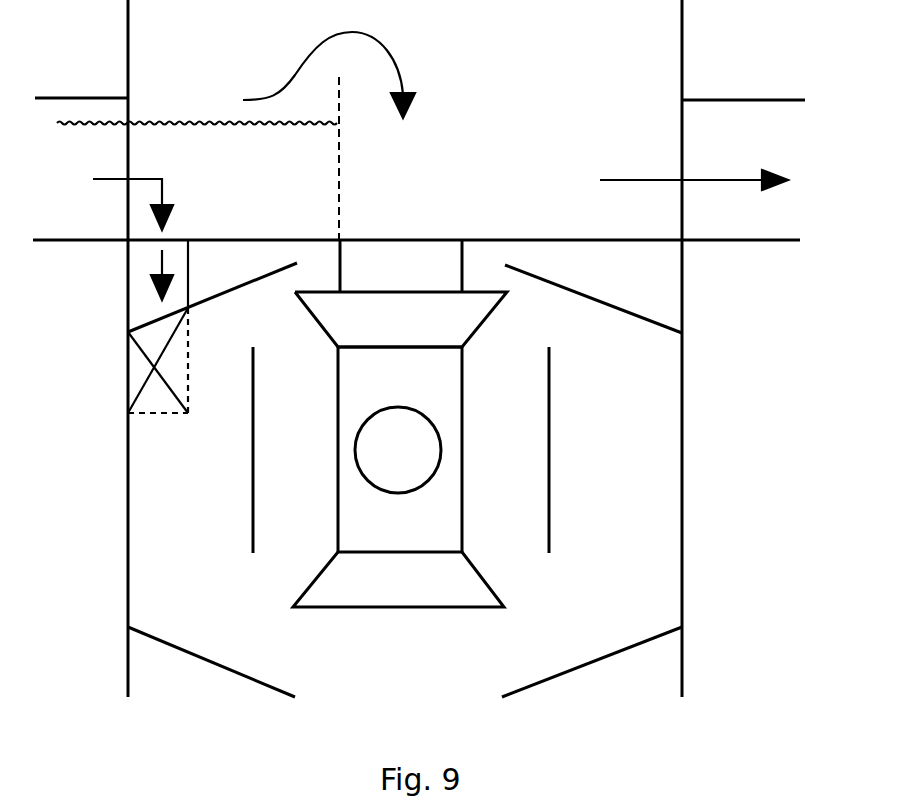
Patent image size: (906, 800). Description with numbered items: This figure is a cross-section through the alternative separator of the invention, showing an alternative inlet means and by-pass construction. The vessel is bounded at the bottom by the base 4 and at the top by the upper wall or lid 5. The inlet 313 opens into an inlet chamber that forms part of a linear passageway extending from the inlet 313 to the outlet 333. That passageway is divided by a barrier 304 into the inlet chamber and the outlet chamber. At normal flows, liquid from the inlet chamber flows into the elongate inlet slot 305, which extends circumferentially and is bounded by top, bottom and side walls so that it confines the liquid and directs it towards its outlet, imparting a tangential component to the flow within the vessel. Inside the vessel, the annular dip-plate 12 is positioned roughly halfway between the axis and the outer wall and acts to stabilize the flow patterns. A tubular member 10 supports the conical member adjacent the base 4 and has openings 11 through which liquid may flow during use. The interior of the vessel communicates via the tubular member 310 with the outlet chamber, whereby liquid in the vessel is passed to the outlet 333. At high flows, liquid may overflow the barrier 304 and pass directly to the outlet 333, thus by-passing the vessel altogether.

The inlet 313 is at (64, 160).
The barrier 304 is at (340, 196).
The outlet 333 is at (712, 207).
The upper wall or lid 5 is at (221, 300).
The inlet slot 305 is at (140, 367).
The annular dip-plate 12 is at (250, 483).
The tubular member 10 is at (355, 536).
The tubular member 310 is at (428, 383).
The openings 11 is at (413, 460).
The base 4 is at (593, 665).